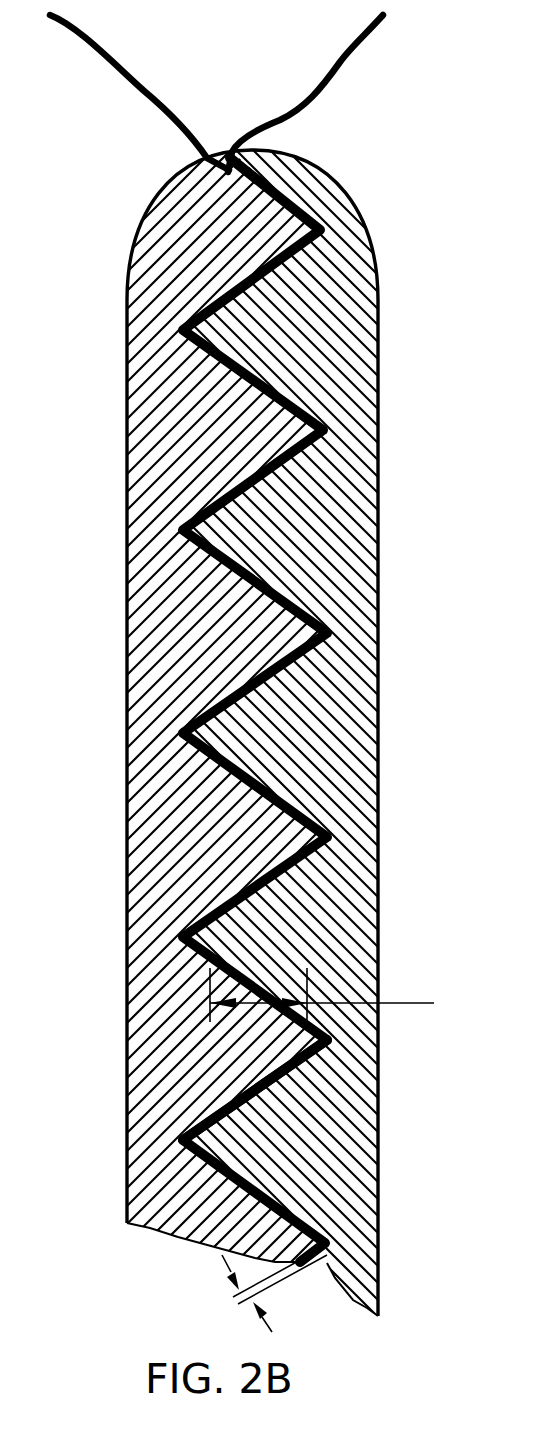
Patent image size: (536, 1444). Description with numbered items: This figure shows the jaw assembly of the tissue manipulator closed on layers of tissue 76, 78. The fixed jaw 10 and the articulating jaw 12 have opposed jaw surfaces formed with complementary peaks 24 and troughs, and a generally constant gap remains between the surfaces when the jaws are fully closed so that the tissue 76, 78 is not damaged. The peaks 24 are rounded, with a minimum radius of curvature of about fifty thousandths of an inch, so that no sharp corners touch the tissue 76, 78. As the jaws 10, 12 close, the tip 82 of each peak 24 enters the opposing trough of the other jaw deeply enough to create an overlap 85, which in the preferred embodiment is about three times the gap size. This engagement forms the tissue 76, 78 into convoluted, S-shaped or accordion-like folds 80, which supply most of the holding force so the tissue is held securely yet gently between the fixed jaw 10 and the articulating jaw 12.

The fixed jaw 10 is at (268, 735).
The articulating jaw 12 is at (105, 510).
The peaks 24 is at (285, 1149).
The tissue 76 is at (356, 52).
The tissue 78 is at (92, 30).
The folds 80 is at (243, 767).
The tip 82 is at (283, 1047).
The overlap 85 is at (337, 995).